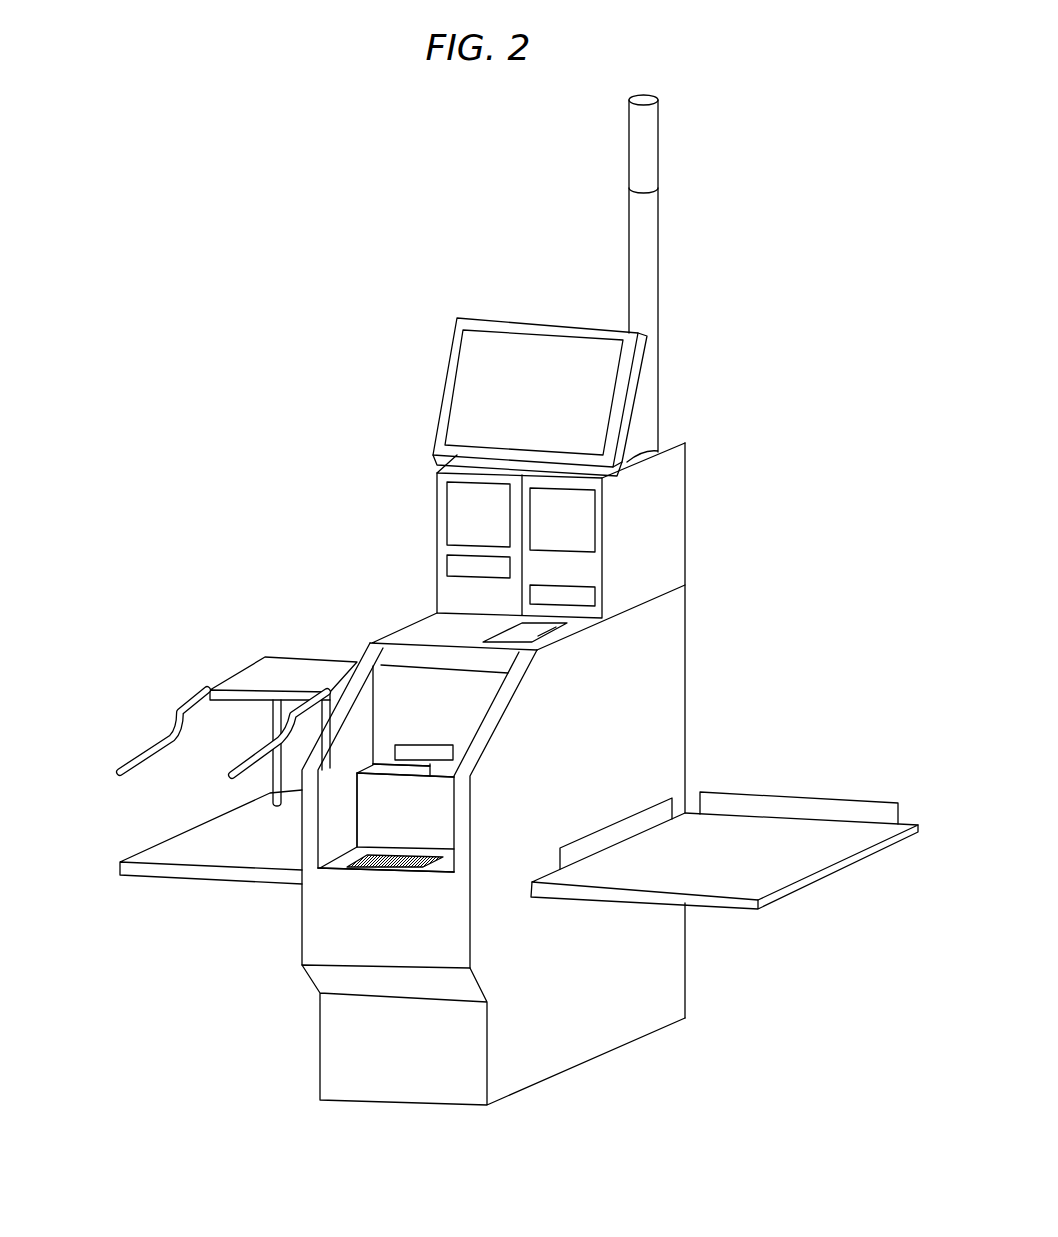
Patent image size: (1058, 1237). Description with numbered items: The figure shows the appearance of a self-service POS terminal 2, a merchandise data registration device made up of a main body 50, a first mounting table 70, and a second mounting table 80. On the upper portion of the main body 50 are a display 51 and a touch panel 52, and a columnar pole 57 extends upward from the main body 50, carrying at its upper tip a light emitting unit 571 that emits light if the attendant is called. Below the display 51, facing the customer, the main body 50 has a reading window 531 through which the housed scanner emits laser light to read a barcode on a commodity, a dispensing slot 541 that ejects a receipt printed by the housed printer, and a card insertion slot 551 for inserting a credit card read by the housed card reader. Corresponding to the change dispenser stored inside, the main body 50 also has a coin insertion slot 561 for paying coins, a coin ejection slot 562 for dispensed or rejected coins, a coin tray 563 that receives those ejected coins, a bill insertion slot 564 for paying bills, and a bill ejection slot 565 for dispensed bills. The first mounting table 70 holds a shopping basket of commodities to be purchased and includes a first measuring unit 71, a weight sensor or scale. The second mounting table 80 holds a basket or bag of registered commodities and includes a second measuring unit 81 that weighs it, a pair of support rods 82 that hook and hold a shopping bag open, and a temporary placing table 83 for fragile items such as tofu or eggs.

The self-service POS terminal 2 is at (296, 200).
The main body 50 is at (367, 488).
The display 51 is at (514, 318).
The touch panel 52 is at (563, 350).
The columnar pole 57 is at (650, 233).
The light emitting unit 571 is at (650, 149).
The reading window 531 is at (580, 513).
The dispensing slot 541 is at (580, 597).
The card insertion slot 551 is at (454, 562).
The coin insertion slot 561 is at (585, 627).
The coin ejection slot 562 is at (427, 743).
The coin tray 563 is at (427, 776).
The bill insertion slot 564 is at (312, 868).
The bill ejection slot 565 is at (457, 870).
The first mounting table 70 is at (866, 773).
The first measuring unit 71 is at (758, 863).
The second mounting table 80 is at (94, 816).
The second measuring unit 81 is at (203, 858).
The support rods 82 is at (267, 737).
The temporary placing table 83 is at (257, 672).